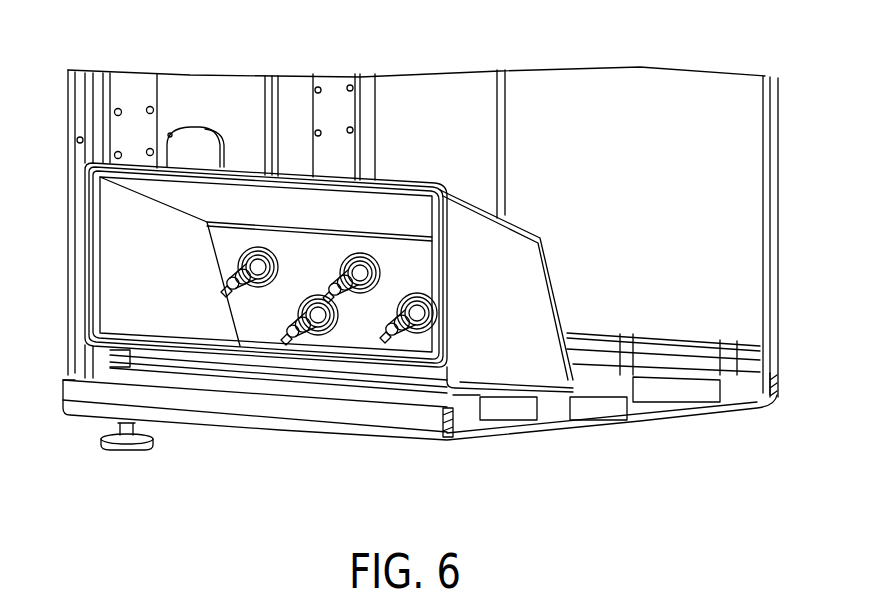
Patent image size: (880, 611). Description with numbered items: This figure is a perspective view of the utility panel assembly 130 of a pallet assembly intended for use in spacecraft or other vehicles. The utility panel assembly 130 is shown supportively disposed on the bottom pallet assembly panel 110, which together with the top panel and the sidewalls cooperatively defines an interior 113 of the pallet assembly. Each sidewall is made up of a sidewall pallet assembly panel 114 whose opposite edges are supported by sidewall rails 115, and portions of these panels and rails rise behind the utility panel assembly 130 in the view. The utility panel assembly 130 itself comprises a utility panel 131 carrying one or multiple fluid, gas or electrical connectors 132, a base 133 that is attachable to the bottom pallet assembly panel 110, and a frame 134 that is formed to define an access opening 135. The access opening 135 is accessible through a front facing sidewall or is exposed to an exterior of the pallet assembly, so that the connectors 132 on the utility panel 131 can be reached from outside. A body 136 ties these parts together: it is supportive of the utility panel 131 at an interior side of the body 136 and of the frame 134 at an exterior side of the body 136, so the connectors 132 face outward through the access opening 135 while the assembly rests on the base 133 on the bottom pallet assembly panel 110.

The bottom pallet assembly panel 110 is at (683, 388).
The interior 113 is at (542, 190).
The sidewall pallet assembly panel 114 is at (203, 97).
The sidewall rails 115 is at (118, 108).
The utility panel assembly 130 is at (118, 270).
The utility panel 131 is at (260, 320).
The connectors 132 is at (412, 352).
The base 133 is at (453, 395).
The frame 134 is at (197, 353).
The access opening 135 is at (126, 305).
The body 136 is at (500, 297).